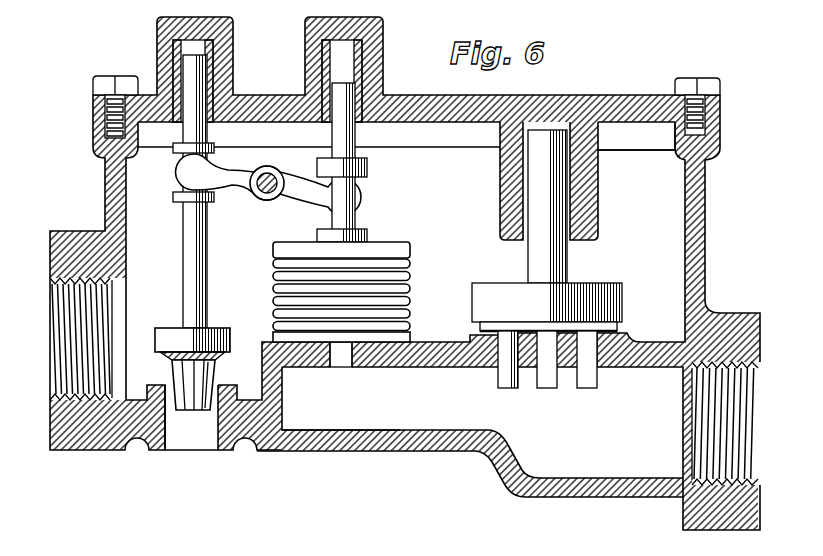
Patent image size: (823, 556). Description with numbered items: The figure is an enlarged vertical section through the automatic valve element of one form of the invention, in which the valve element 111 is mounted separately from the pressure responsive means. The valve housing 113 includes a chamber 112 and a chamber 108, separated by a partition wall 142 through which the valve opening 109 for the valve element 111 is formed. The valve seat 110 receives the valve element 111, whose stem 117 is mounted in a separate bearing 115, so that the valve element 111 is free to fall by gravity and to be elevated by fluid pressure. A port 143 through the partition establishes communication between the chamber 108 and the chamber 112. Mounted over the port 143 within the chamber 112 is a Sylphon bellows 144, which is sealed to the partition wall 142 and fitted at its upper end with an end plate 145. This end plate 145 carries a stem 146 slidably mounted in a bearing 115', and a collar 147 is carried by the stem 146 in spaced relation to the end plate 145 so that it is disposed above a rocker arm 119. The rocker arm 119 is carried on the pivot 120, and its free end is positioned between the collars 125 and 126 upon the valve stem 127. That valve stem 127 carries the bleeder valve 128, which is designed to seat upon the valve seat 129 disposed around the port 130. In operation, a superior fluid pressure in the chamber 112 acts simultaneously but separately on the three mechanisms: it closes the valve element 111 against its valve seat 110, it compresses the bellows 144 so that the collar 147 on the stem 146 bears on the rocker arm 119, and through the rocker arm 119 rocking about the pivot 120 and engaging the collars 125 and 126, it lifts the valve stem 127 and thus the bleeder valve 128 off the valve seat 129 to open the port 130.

The chamber 108 is at (540, 484).
The valve opening 109 is at (592, 352).
The valve seat 110 is at (614, 330).
The valve element 111 is at (609, 300).
The chamber 112 is at (620, 155).
The valve housing 113 is at (88, 191).
The bearing 115 is at (574, 181).
The bearing 115' is at (378, 78).
The stem 117 is at (553, 257).
The rocker arm 119 is at (237, 186).
The pivot 120 is at (277, 199).
The collar 125 is at (177, 203).
The collar 126 is at (176, 149).
The valve stem 127 is at (196, 258).
The bleeder valve 128 is at (238, 322).
The valve seat 129 is at (163, 382).
The port 130 is at (174, 432).
The partition wall 142 is at (443, 364).
The port 143 is at (338, 366).
The Sylphon bellows 144 is at (403, 287).
The end plate 145 is at (395, 249).
The stem 146 is at (354, 140).
The collar 147 is at (368, 178).